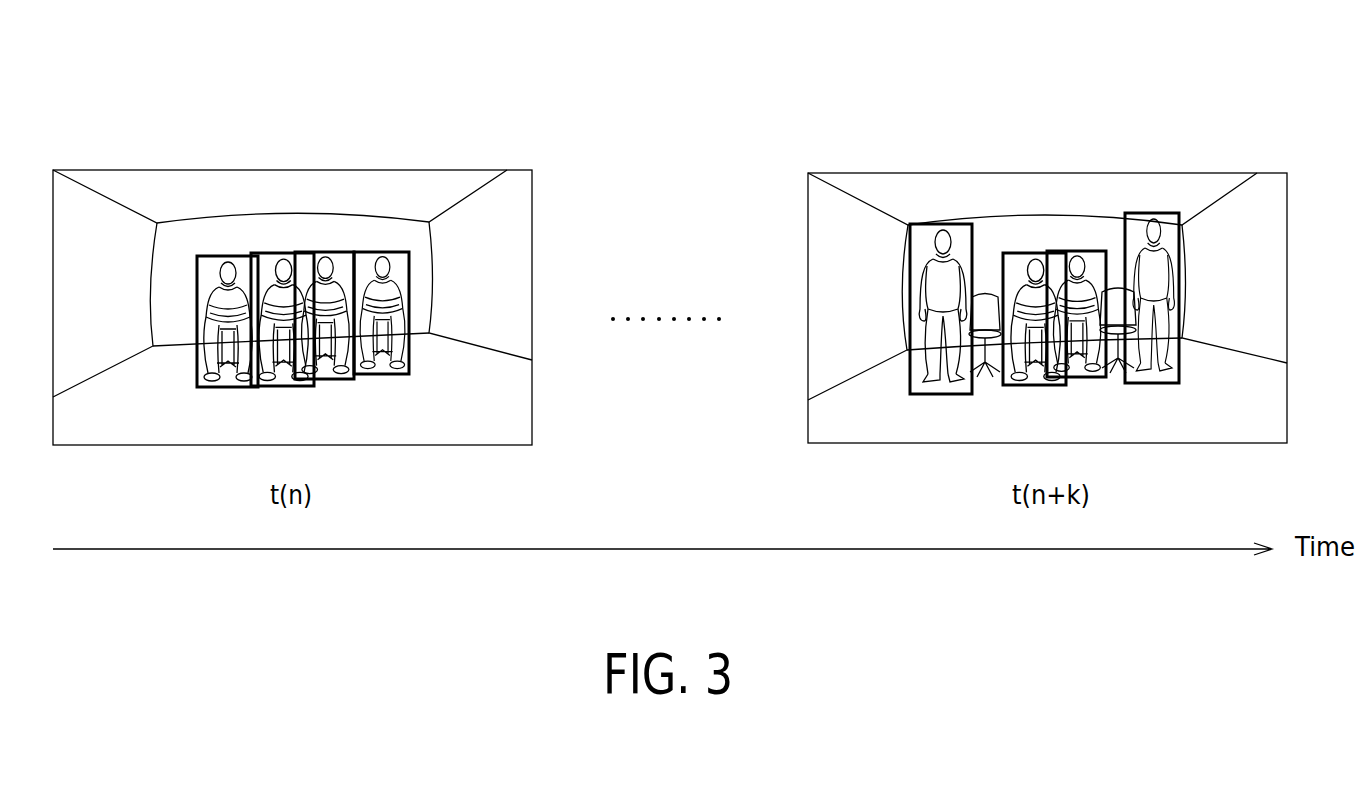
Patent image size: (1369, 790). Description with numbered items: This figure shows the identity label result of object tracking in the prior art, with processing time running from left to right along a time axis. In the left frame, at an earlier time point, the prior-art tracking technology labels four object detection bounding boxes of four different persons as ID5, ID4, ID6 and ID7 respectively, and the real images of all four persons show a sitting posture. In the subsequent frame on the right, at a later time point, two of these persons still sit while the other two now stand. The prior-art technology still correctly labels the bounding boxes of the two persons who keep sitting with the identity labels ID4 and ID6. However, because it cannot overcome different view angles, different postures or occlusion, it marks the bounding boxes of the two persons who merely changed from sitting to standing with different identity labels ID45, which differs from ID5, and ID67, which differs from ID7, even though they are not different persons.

The identity label ID5 is at (215, 256).
The identity label ID4 is at (275, 253).
The identity label ID6 is at (337, 252).
The identity label ID7 is at (388, 252).
The identity label ID45 is at (960, 224).
The identity label ID67 is at (1153, 213).